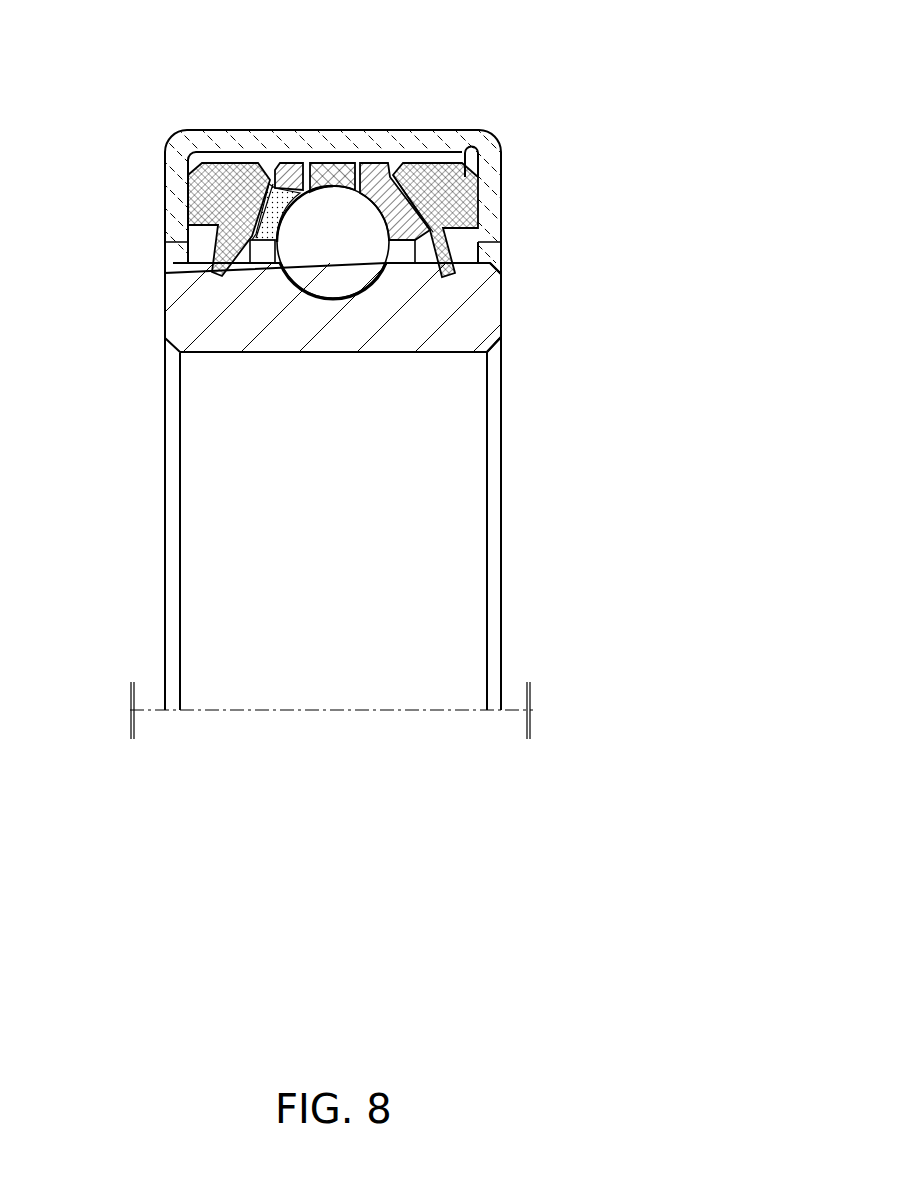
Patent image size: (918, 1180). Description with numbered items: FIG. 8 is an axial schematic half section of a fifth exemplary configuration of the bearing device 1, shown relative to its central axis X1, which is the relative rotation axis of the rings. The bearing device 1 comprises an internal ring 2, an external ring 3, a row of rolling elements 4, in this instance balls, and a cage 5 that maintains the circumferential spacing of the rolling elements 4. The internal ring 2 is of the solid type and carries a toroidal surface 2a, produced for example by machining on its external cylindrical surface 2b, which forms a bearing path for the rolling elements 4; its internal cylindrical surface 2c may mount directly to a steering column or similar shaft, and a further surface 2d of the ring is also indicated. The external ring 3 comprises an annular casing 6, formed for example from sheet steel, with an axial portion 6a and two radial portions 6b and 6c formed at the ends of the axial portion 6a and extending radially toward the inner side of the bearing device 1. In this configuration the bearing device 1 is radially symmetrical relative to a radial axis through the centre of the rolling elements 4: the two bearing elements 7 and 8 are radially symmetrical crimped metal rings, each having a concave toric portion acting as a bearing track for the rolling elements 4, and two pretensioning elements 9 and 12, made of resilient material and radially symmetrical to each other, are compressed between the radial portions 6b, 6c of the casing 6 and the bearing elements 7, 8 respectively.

The bearing device 1 is at (513, 67).
The internal ring 2 is at (502, 307).
The toroidal surface 2a is at (323, 296).
The external cylindrical surface 2b is at (482, 248).
The internal cylindrical surface 2c is at (467, 357).
The inner ring groove 2d is at (255, 243).
The external ring 3 is at (178, 135).
The rolling elements 4 is at (373, 271).
The cage 5 is at (333, 186).
The annular casing 6 is at (238, 128).
The axial portion 6a is at (337, 165).
The radial portion 6b is at (503, 180).
The radial portion 6c is at (186, 190).
The bearing element 7 is at (370, 165).
The bearing element 8 is at (287, 165).
The pretensioning element 9 is at (186, 203).
The pretensioning element 12 is at (430, 167).
The central axis X1 is at (385, 717).